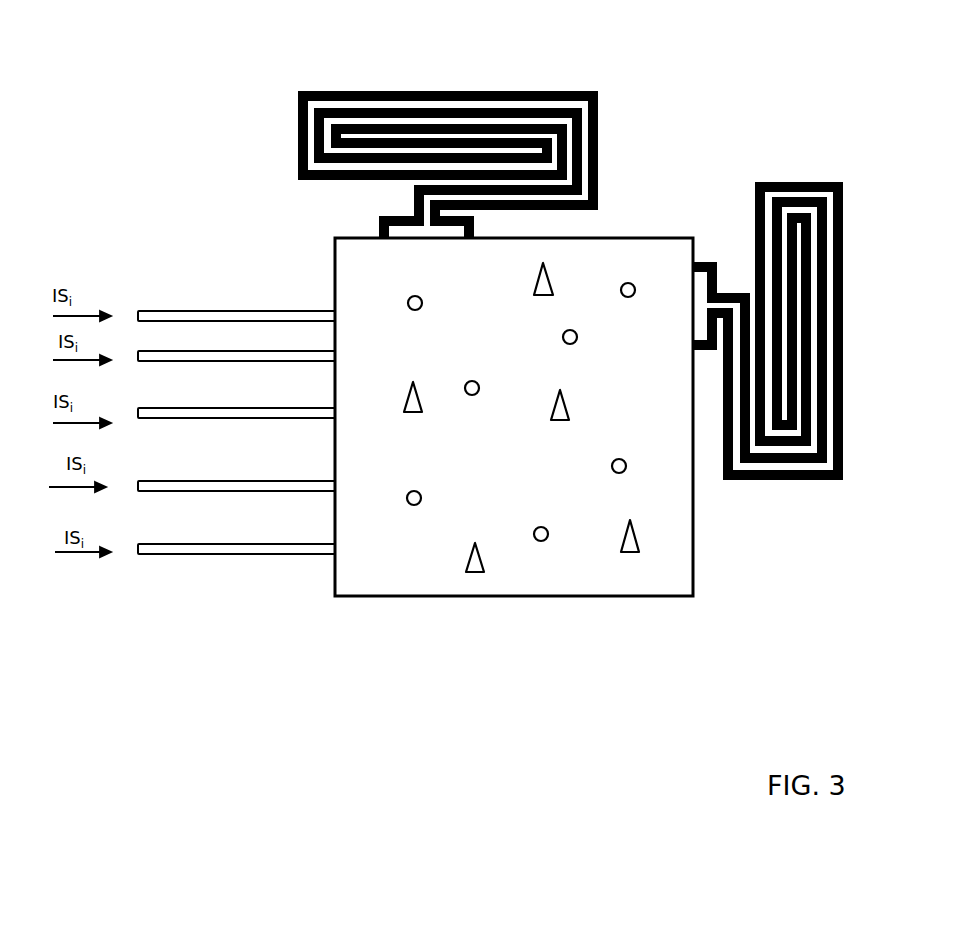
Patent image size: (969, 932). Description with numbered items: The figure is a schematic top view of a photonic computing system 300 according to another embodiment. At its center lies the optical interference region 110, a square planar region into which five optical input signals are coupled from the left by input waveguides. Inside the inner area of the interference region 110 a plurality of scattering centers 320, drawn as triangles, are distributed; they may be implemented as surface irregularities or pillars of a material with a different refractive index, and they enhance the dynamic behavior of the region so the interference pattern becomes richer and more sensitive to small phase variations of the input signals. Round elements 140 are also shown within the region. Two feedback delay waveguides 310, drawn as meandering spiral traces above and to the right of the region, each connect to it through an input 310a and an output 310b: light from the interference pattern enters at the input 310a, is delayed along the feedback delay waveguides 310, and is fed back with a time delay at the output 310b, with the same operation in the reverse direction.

The optical interference region 110 is at (539, 478).
The first sensing elements 140 is at (562, 337).
The photonic computing system 300 is at (792, 714).
The feedback delay waveguides 310 is at (572, 91).
The input of the feedback delay waveguides 310a is at (378, 218).
The output of the feedback delay waveguides 310b is at (474, 222).
The scattering centers 320 is at (620, 548).